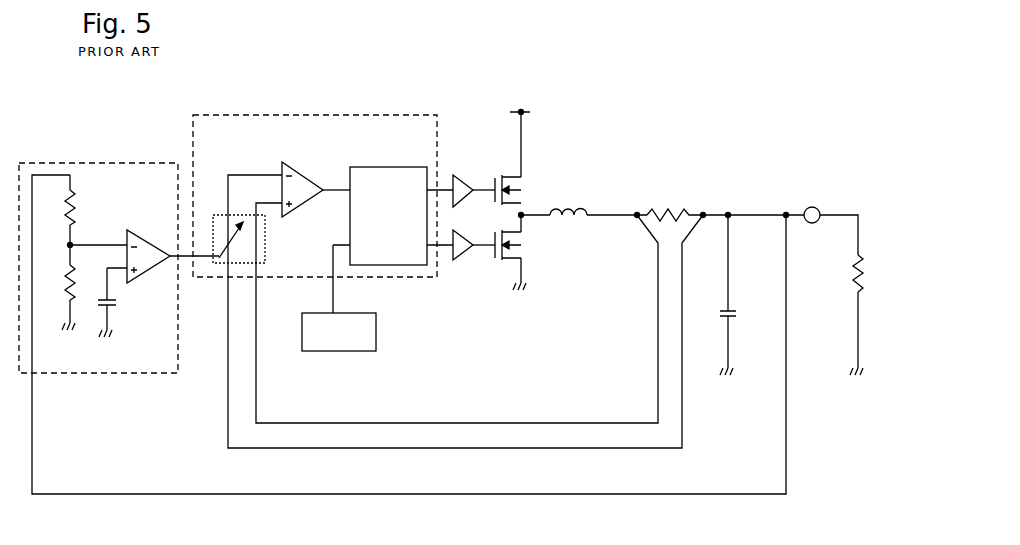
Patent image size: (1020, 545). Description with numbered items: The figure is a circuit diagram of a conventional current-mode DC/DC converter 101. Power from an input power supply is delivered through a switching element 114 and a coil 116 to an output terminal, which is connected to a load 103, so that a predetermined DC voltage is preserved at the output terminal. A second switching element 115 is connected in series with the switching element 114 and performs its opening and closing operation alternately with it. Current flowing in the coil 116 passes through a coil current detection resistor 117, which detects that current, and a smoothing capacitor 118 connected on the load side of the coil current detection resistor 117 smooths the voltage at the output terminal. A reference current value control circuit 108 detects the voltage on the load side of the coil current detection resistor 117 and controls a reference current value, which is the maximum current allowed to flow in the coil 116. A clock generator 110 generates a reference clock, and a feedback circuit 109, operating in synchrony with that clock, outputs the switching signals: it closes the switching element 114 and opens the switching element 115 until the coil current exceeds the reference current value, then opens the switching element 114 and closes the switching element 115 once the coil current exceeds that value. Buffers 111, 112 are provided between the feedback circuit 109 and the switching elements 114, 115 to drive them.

The DC/DC converter 101 is at (443, 51).
The load 103 is at (865, 255).
The reference current value control circuit 108 is at (97, 164).
The feedback circuit 109 is at (417, 116).
The clock generator 110 is at (378, 333).
The buffer 111 is at (459, 173).
The buffer 112 is at (469, 262).
The switching element 114 is at (526, 177).
The switching element 115 is at (526, 251).
The coil 116 is at (566, 203).
The coil current detection resistor 117 is at (664, 205).
The smoothing capacitor 118 is at (724, 320).